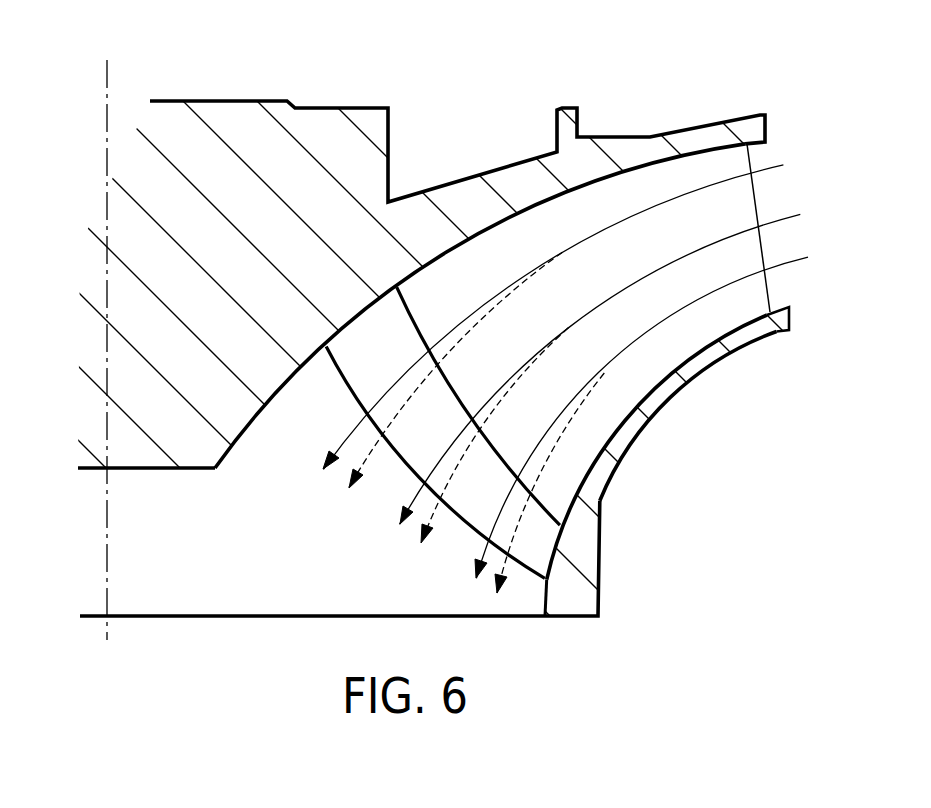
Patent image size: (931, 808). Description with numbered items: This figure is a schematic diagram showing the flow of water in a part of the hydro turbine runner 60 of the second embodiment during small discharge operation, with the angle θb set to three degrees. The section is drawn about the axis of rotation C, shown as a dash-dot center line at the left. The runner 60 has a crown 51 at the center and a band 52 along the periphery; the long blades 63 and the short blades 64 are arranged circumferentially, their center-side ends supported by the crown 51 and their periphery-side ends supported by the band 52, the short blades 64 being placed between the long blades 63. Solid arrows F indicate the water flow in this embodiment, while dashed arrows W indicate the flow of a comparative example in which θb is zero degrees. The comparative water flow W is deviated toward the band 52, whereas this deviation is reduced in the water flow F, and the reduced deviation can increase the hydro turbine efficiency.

The hydro turbine runner 60 is at (345, 107).
The crown 51 is at (466, 194).
The band 52 is at (588, 563).
The long blade 63 is at (357, 384).
The short blade 64 is at (572, 462).
The water flow F is at (402, 380).
The comparative water flow W is at (573, 413).
The axis of rotation C is at (104, 163).